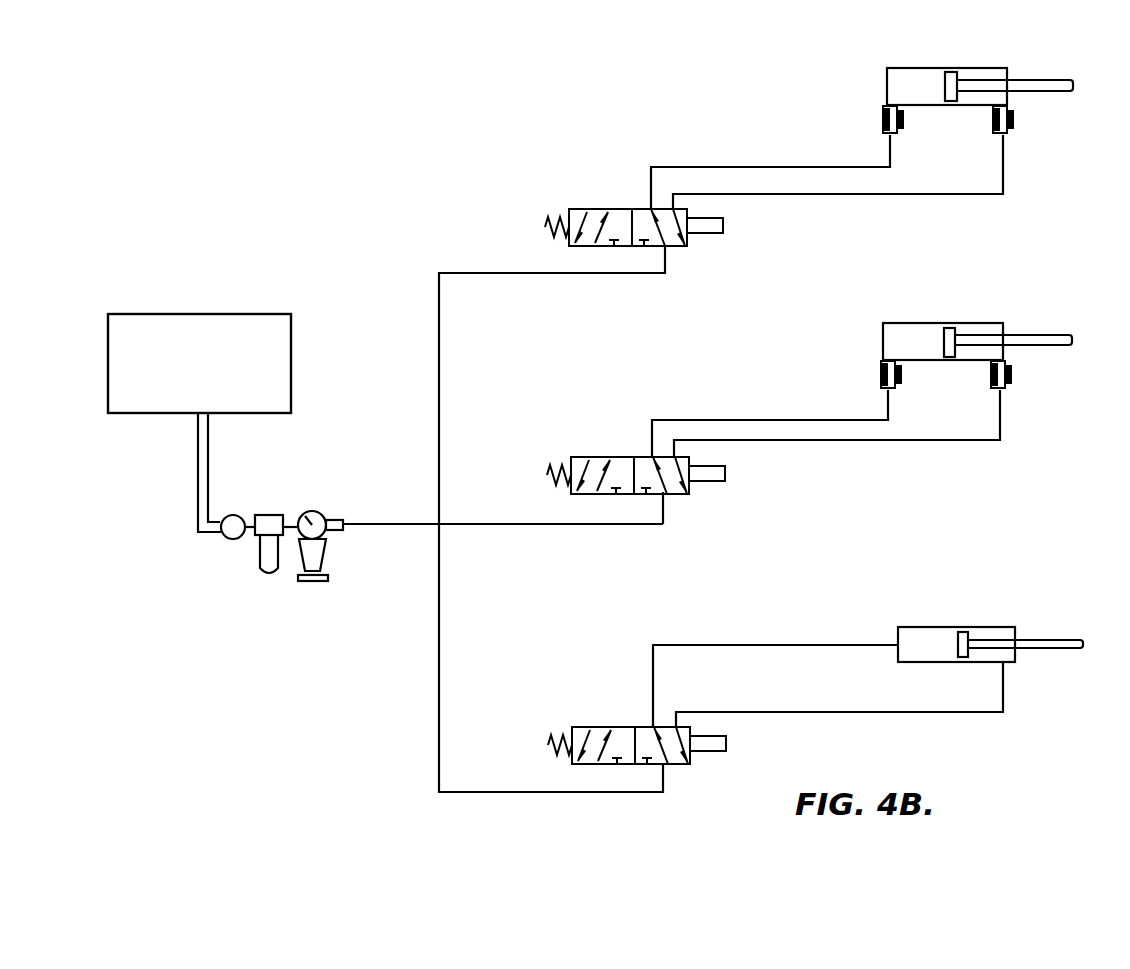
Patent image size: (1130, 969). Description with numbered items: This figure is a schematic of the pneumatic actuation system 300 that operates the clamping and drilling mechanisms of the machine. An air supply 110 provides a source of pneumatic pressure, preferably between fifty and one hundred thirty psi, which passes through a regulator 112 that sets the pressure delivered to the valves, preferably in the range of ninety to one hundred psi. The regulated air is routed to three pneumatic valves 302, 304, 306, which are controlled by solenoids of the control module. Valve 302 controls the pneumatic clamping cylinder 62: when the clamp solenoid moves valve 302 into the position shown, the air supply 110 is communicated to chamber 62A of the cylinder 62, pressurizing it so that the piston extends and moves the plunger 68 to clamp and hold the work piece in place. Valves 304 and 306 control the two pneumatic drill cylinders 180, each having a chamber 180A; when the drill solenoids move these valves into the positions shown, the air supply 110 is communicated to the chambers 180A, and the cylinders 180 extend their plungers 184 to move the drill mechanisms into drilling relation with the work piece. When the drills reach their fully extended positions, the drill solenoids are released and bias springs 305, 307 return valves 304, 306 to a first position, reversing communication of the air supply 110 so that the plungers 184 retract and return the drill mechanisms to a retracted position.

The pneumatic actuation system 300 is at (398, 112).
The air supply 110 is at (292, 358).
The regulator 112 is at (232, 597).
The pneumatic valve 302 is at (676, 260).
The pneumatic valve 304 is at (603, 438).
The bias spring 305 is at (548, 478).
The pneumatic valve 306 is at (683, 780).
The bias spring 307 is at (553, 738).
The pneumatic clamping cylinder 62 is at (940, 68).
The chamber 62A is at (905, 75).
The plunger 68 is at (1050, 80).
The pneumatic drill cylinder 180 is at (965, 325).
The chamber 180A is at (905, 335).
The plunger 184 is at (1037, 330).